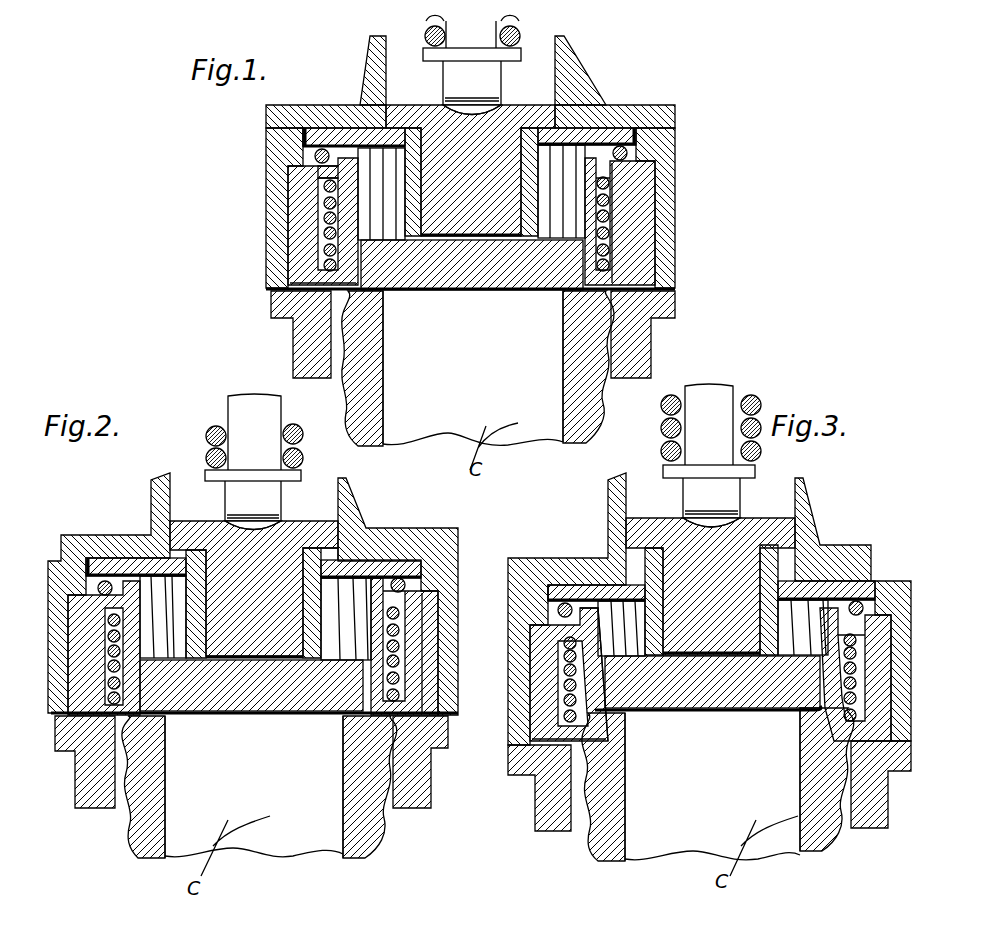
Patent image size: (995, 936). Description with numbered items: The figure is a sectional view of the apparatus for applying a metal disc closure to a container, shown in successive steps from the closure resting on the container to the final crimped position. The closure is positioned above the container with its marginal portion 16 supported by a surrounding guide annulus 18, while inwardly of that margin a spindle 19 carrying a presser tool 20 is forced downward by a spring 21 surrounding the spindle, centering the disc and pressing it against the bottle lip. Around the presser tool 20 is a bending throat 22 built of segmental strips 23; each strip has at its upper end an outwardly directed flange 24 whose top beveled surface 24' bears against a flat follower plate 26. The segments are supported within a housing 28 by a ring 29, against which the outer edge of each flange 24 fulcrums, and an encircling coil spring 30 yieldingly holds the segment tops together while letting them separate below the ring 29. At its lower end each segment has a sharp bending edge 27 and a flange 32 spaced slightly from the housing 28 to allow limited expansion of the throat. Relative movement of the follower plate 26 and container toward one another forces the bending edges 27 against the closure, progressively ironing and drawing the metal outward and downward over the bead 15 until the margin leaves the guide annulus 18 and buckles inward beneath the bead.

In FIG. 3, the bead 15 is at (827, 708).
In FIG. 1, the marginal portion 16 is at (648, 252).
In FIG. 1, the guide annulus 18 is at (665, 298).
In FIG. 2, the guide annulus 18 is at (407, 782).
In FIG. 3, the guide annulus 18 is at (543, 808).
In FIG. 1, the spindle 19 is at (468, 76).
In FIG. 2, the spindle 19 is at (242, 402).
In FIG. 3, the spindle 19 is at (718, 393).
In FIG. 1, the presser tool 20 is at (480, 256).
In FIG. 2, the presser tool 20 is at (255, 700).
In FIG. 3, the presser tool 20 is at (728, 668).
In FIG. 1, the spring 21 is at (510, 26).
In FIG. 2, the spring 21 is at (208, 418).
In FIG. 3, the spring 21 is at (653, 420).
In FIG. 1, the bending throat 22 is at (600, 188).
In FIG. 2, the bending throat 22 is at (412, 570).
In FIG. 3, the bending throat 22 is at (797, 607).
In FIG. 1, the segmental strips 23 is at (305, 168).
In FIG. 2, the segmental strips 23 is at (393, 648).
In FIG. 3, the segmental strips 23 is at (588, 655).
In FIG. 1, the outwardly directed flange 24 is at (469, 110).
In FIG. 2, the outwardly directed flange 24 is at (260, 539).
In FIG. 3, the outwardly directed flange 24 is at (711, 568).
In FIG. 1, the top beveled surface 24' is at (471, 184).
In FIG. 1, the follower plate 26 is at (300, 133).
In FIG. 2, the follower plate 26 is at (343, 557).
In FIG. 3, the follower plate 26 is at (558, 577).
In FIG. 1, the lower bending edge 27 is at (330, 272).
In FIG. 2, the lower bending edge 27 is at (397, 701).
In FIG. 3, the lower bending edge 27 is at (523, 768).
In FIG. 1, the housing 28 is at (630, 215).
In FIG. 2, the housing 28 is at (414, 608).
In FIG. 1, the ring 29 is at (622, 148).
In FIG. 2, the ring 29 is at (88, 580).
In FIG. 3, the ring 29 is at (853, 590).
In FIG. 1, the coil spring 30 is at (318, 198).
In FIG. 3, the coil spring 30 is at (555, 692).
In FIG. 1, the flange 32 is at (560, 285).
In FIG. 2, the flange 32 is at (70, 748).